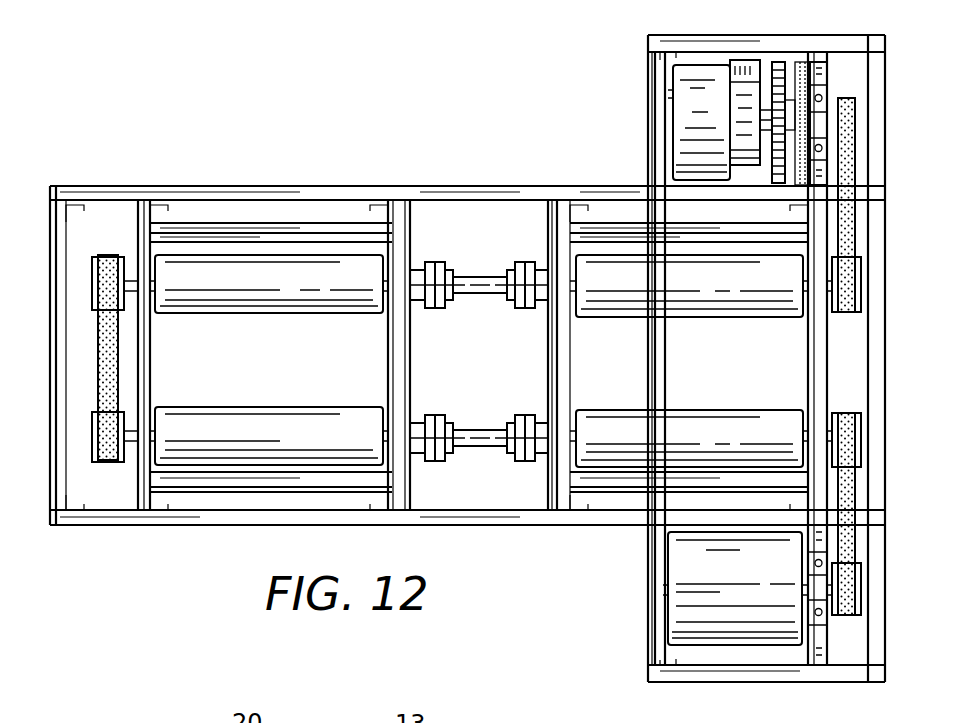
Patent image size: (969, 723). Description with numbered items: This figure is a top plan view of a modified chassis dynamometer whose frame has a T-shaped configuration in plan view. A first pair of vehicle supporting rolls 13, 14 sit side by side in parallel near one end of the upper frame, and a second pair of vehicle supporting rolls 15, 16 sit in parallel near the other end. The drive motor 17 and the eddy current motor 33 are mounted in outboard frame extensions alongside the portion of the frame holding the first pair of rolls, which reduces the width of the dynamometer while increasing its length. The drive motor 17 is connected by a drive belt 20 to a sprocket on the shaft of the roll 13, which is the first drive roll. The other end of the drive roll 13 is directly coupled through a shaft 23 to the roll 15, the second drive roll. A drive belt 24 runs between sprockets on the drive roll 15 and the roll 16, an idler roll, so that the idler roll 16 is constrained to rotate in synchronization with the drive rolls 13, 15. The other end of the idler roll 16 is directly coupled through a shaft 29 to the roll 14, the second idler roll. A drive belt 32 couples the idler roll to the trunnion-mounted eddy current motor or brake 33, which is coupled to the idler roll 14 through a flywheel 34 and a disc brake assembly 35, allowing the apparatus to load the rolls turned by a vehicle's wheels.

The vehicle supporting roll 13 is at (700, 428).
The vehicle supporting roll 14 is at (726, 314).
The vehicle supporting roll 15 is at (258, 420).
The vehicle supporting roll 16 is at (240, 298).
The drive motor 17 is at (740, 625).
The drive belt 20 is at (845, 415).
The shaft 23 is at (478, 429).
The drive belt 24 is at (110, 360).
The shaft 29 is at (478, 287).
The drive belt 32 is at (845, 308).
The eddy current motor 33 is at (683, 88).
The flywheel 34 is at (778, 62).
The disc brake assembly 35 is at (820, 68).